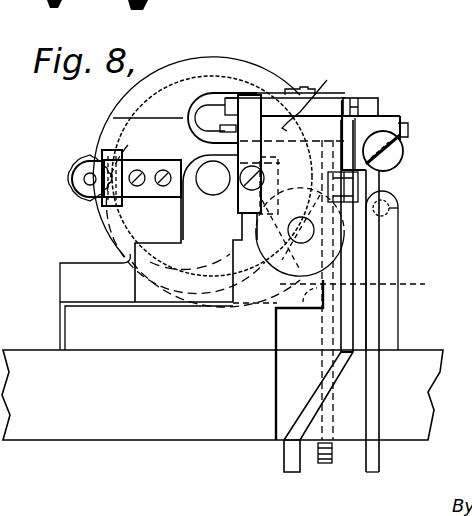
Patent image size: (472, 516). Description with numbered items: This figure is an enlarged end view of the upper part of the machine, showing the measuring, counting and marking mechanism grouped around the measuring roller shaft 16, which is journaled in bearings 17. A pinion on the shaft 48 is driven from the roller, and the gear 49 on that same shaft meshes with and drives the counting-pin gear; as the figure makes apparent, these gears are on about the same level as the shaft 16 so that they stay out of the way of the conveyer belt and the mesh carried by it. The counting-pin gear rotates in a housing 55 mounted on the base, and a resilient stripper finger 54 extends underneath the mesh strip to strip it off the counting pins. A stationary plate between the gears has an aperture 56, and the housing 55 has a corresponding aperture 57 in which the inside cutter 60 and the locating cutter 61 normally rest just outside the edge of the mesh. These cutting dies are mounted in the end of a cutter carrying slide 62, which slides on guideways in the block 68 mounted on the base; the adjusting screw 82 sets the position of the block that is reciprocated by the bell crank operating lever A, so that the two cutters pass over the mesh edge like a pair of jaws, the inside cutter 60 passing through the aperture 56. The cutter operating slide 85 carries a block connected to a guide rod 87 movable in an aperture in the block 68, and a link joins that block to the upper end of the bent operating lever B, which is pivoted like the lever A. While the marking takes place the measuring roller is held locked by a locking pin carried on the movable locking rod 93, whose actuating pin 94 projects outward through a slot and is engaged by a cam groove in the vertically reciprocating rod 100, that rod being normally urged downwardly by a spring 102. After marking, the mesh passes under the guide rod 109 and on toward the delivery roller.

The housing 55 is at (122, 106).
The aperture 57 is at (199, 82).
The bearings 17 is at (190, 258).
The shaft 48 is at (89, 172).
The gear 49 is at (100, 176).
The shaft 16 is at (214, 191).
The aperture 56 is at (222, 118).
The locating cutter 61 is at (320, 135).
The locking rod 93 is at (277, 290).
The inside cutter 60 is at (302, 88).
The cutter operating slide 85 is at (327, 80).
The block 68 is at (354, 127).
The cutter carrying slide 62 is at (380, 122).
The adjusting screw 82 is at (404, 153).
The guide rod 109 is at (390, 203).
The operating lever A is at (381, 461).
The operating lever B is at (283, 458).
The guide rod 87 is at (312, 230).
The actuating pin 94 is at (330, 263).
The resilient stripper finger 54 is at (364, 289).
The vertically reciprocating rod 100 is at (323, 458).
The spring 102 is at (328, 462).